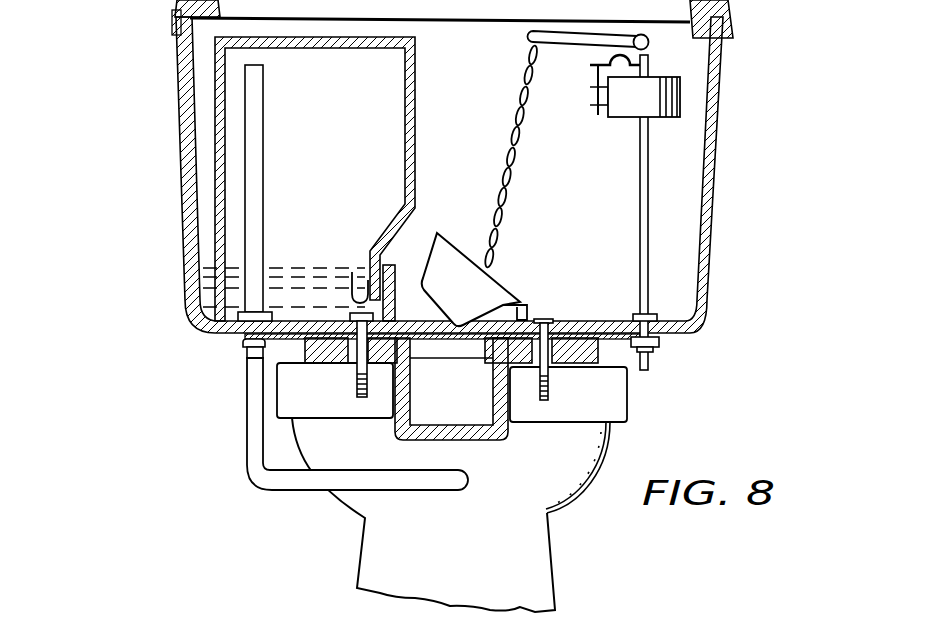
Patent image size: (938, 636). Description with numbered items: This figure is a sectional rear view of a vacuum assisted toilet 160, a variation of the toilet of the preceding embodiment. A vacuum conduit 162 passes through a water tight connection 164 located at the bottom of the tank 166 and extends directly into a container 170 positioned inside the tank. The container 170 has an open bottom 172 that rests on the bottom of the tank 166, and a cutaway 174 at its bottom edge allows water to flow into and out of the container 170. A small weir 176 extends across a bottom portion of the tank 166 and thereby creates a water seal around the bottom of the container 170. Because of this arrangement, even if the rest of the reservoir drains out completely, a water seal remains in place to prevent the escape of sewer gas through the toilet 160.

The vacuum assisted toilet 160 is at (152, 64).
The vacuum conduit 162 is at (247, 465).
The water tight connection 164 is at (240, 341).
The tank 166 is at (196, 278).
The container 170 is at (220, 113).
The open bottom 172 is at (215, 337).
The cutaway 174 is at (352, 272).
The small weir 176 is at (393, 265).